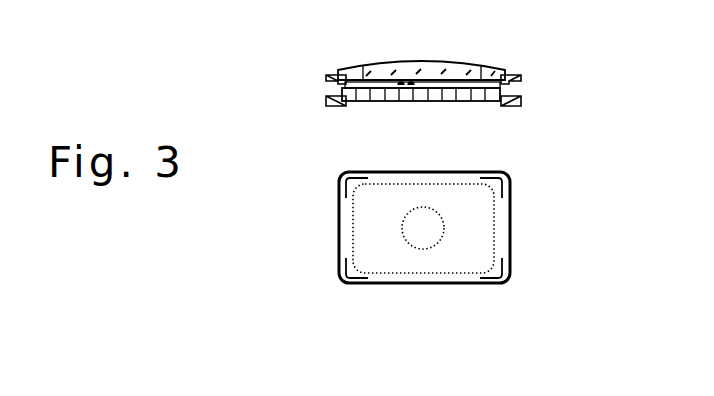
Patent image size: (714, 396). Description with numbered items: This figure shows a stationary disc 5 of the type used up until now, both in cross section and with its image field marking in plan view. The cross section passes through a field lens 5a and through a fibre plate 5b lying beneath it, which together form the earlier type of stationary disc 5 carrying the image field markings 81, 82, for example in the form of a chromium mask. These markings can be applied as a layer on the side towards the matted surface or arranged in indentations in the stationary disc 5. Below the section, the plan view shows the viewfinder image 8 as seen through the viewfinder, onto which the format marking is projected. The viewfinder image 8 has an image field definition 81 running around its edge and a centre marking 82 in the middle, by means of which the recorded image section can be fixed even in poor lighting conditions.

The stationary disc 5 is at (537, 85).
The field lens 5a is at (382, 68).
The fibre plate 5b is at (365, 97).
The viewfinder image 8 is at (509, 186).
The image field definition 81 is at (362, 68).
The centre marking 82 is at (415, 68).